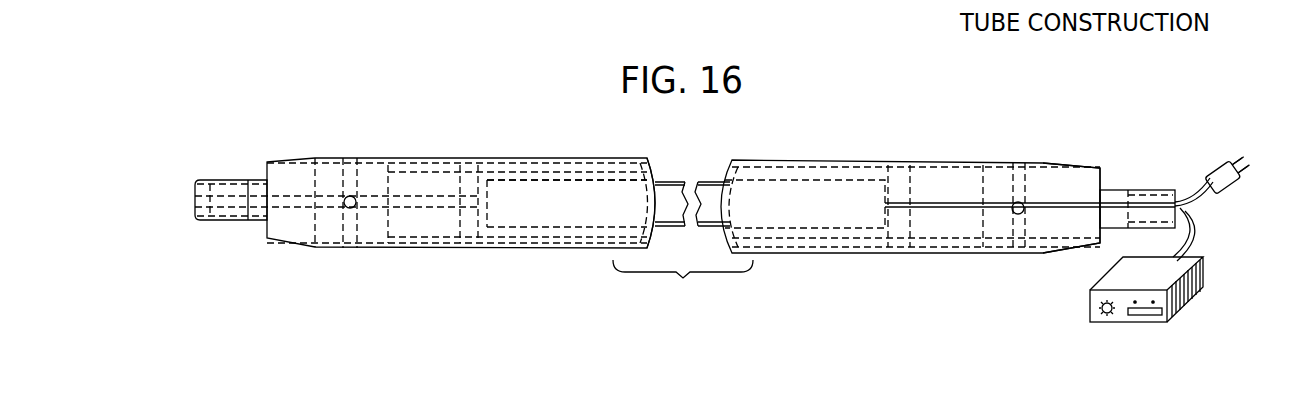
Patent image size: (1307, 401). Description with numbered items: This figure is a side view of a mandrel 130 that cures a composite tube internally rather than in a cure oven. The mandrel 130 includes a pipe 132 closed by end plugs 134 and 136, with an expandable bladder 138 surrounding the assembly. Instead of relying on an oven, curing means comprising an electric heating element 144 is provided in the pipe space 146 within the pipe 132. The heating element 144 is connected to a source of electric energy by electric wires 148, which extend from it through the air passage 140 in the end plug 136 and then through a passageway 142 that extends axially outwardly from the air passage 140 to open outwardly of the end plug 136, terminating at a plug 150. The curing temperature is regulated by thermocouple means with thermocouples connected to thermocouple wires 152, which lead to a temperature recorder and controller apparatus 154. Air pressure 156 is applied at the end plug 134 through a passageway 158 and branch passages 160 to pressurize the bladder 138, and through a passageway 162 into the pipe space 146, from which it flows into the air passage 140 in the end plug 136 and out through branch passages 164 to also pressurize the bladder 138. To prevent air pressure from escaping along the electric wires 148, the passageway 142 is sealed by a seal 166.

The mandrel 130 is at (928, 147).
The pipe 132 is at (795, 173).
The end plug 134 is at (290, 177).
The end plug 136 is at (1097, 192).
The expandable bladder 138 is at (643, 158).
The air passage 140 is at (990, 195).
The passageway for electric wires 142 is at (1082, 195).
The electric heating element 144 is at (555, 197).
The pipe space 146 is at (600, 175).
The electric wires 148 is at (1198, 185).
The plug 150 is at (1236, 190).
The thermocouple wires 152 is at (1195, 232).
The temperature recorder and controller apparatus 154 is at (1090, 303).
The air pressure 156 is at (180, 198).
The passageway 158 is at (323, 193).
The branch passages 160 is at (347, 207).
The passageway 162 is at (412, 192).
The branch passages 164 is at (1027, 185).
The seal 166 is at (1183, 185).